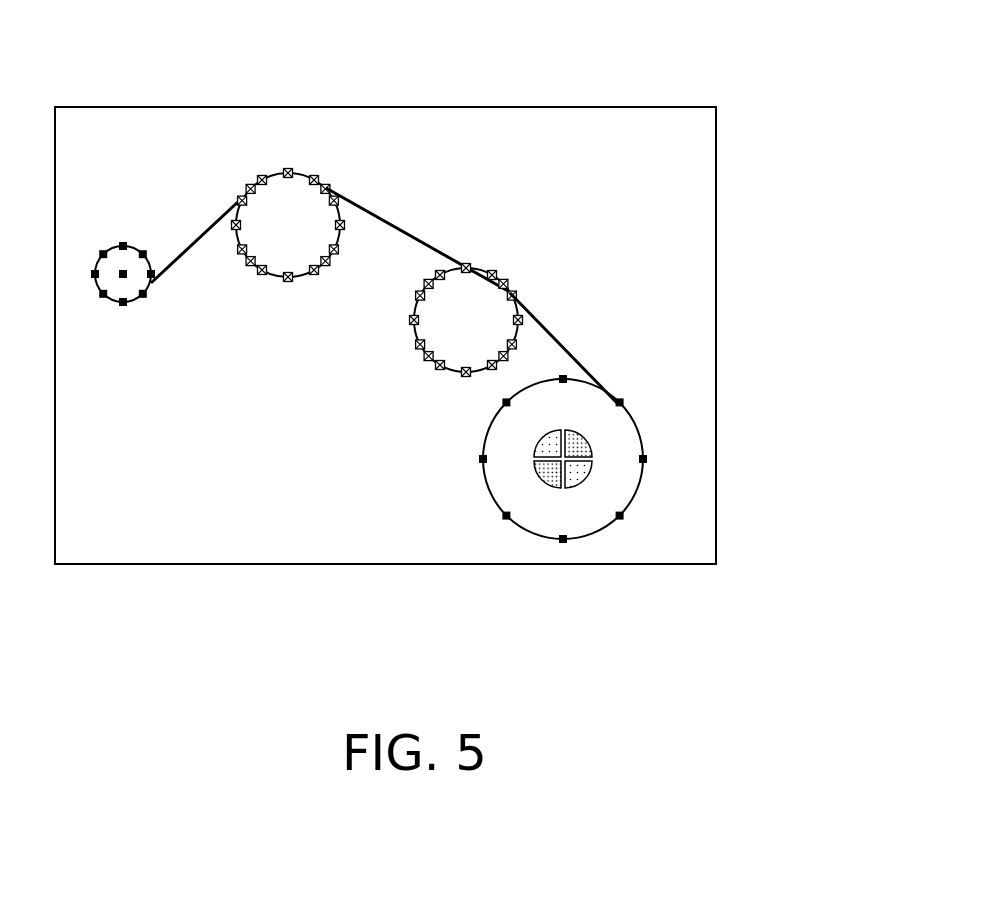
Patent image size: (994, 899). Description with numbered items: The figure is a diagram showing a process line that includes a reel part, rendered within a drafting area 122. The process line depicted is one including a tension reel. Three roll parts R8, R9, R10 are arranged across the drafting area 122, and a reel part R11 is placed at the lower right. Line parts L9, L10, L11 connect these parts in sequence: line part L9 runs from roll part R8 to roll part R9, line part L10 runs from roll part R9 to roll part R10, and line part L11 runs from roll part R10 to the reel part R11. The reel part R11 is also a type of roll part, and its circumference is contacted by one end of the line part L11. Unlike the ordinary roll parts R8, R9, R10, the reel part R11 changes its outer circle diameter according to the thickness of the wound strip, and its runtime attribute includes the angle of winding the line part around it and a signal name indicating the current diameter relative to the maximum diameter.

The drafting area 122 is at (592, 109).
The roll part R8 is at (112, 247).
The roll part R9 is at (275, 172).
The roll part R10 is at (450, 367).
The reel part R11 is at (597, 532).
The line part L9 is at (212, 227).
The line part L10 is at (397, 220).
The line part L11 is at (552, 330).